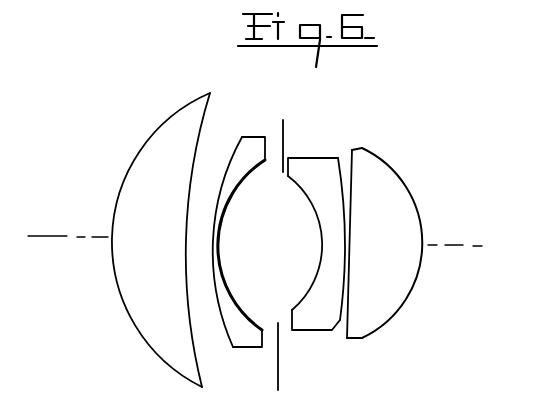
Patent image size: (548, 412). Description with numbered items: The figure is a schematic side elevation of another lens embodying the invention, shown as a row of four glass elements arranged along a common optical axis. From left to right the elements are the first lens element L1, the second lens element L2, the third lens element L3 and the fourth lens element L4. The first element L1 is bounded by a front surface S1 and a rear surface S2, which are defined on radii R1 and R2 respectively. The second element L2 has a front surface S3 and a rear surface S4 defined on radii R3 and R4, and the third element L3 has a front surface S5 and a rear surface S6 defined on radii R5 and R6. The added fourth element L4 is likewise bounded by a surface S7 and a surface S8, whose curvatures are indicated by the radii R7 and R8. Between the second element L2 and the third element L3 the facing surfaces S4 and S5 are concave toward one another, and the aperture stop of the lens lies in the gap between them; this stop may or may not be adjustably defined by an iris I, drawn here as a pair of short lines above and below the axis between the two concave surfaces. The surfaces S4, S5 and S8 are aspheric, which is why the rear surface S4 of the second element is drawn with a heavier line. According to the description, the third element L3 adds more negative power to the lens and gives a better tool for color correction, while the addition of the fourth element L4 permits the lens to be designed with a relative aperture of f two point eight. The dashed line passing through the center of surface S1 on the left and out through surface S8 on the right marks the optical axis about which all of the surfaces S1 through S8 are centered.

The first lens element L1 is at (180, 233).
The second lens element L2 is at (234, 235).
The third lens element L3 is at (309, 241).
The fourth lens element L4 is at (374, 256).
The iris I is at (284, 121).
The radius of first surface R1 is at (112, 238).
The radius of second surface R2 is at (187, 240).
The radius of third surface R3 is at (187, 240).
The radius of fourth surface R4 is at (187, 240).
The radius of fifth surface R5 is at (323, 243).
The radius of sixth surface R6 is at (345, 254).
The radius of curvature of seventh surface R7 is at (348, 246).
The radius of curvature of eighth surface R8 is at (425, 246).
The first lens surface S1 is at (160, 240).
The second lens surface S2 is at (218, 245).
The third lens surface S3 is at (218, 254).
The fourth lens surface S4 is at (234, 245).
The fifth lens surface S5 is at (298, 243).
The sixth lens surface S6 is at (318, 265).
The seventh lens surface S7 is at (355, 268).
The eighth lens surface S8 is at (393, 250).